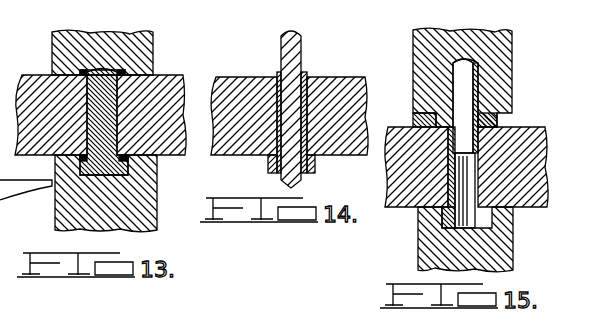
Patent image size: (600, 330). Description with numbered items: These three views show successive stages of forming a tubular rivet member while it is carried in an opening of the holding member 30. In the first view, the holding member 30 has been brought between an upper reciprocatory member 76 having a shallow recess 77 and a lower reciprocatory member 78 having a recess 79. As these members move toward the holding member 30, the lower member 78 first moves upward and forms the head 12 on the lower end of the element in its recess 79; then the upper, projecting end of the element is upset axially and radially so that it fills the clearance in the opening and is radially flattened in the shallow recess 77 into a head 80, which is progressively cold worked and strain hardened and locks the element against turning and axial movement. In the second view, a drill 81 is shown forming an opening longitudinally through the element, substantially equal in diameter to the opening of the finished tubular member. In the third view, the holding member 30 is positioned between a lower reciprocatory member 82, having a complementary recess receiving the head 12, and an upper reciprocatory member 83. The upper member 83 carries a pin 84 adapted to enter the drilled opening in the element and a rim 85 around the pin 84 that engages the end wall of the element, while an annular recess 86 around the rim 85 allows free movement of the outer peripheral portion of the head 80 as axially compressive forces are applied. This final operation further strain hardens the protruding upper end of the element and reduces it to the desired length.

In FIG. 13, the head 12 is at (80, 167).
In FIG. 14, the head 12 is at (316, 160).
In FIG. 15, the head 12 is at (442, 220).
In FIG. 13, the holding member 30 is at (183, 78).
In FIG. 14, the holding member 30 is at (350, 78).
In FIG. 15, the holding member 30 is at (518, 128).
In FIG. 13, the upper reciprocatory member 76 is at (152, 40).
In FIG. 13, the shallow recess 77 is at (120, 72).
In FIG. 13, the lower reciprocatory member 78 is at (150, 190).
In FIG. 13, the recess 79 is at (128, 160).
In FIG. 13, the head 80 is at (56, 72).
In FIG. 14, the head 80 is at (308, 76).
In FIG. 14, the drill 81 is at (302, 48).
In FIG. 15, the lower reciprocatory member 82 is at (428, 250).
In FIG. 15, the upper reciprocatory member 83 is at (505, 40).
In FIG. 15, the pin 84 is at (468, 84).
In FIG. 15, the rim 85 is at (478, 110).
In FIG. 15, the annular recess 86 is at (418, 116).